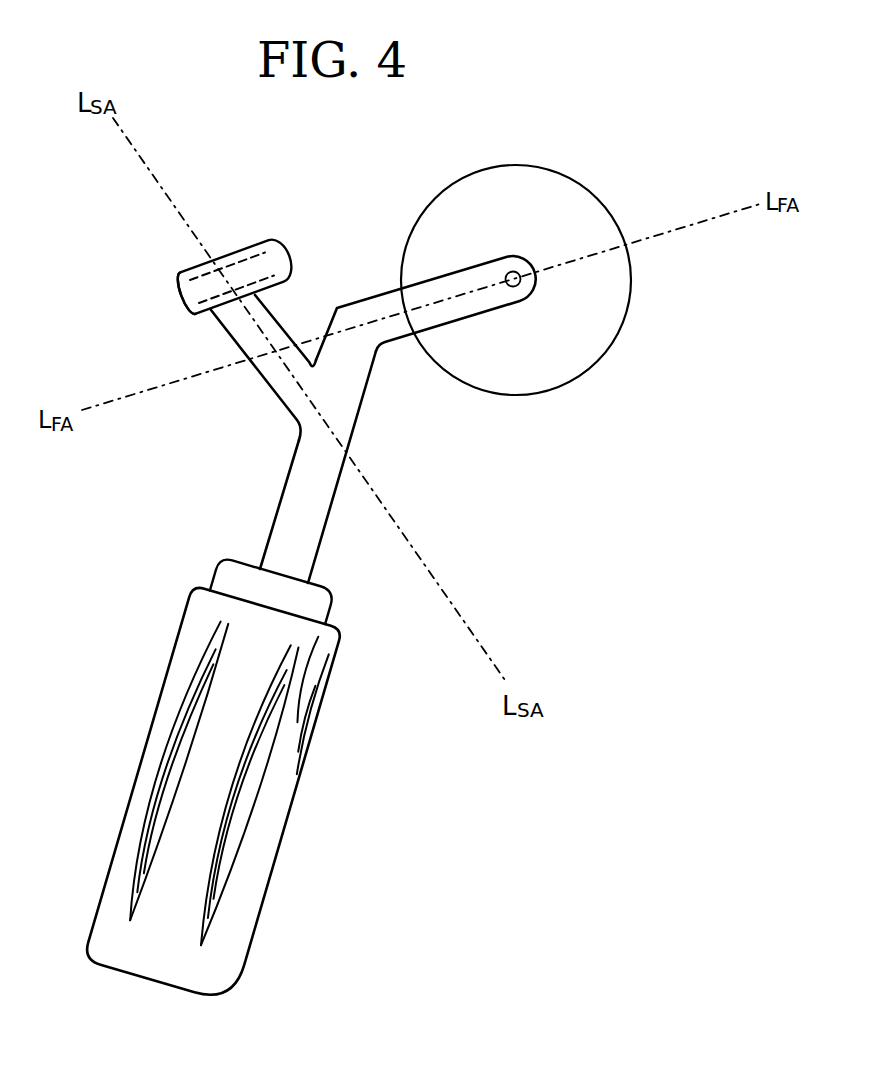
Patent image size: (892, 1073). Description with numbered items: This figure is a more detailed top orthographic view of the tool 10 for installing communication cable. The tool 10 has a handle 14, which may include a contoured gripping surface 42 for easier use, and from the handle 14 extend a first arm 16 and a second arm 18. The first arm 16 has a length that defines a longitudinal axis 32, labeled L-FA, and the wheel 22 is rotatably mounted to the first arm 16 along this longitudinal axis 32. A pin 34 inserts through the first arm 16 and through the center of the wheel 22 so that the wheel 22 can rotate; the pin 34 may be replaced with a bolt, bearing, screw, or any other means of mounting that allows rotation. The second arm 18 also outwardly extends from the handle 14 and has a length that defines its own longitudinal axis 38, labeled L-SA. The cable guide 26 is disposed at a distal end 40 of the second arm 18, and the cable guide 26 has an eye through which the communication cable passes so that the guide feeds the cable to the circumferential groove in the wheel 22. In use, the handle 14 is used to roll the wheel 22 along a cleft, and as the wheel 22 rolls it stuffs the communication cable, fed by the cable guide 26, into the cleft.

The tool 10 is at (95, 260).
The handle 14 is at (266, 547).
The first arm 16 is at (352, 303).
The second arm 18 is at (260, 368).
The wheel 22 is at (575, 180).
The cable guide 26 is at (228, 252).
The longitudinal axis of the first arm 32 is at (674, 231).
The pin 34 is at (520, 284).
The longitudinal axis of the second arm 38 is at (423, 556).
The distal end of the second arm 40 is at (206, 318).
The contoured gripping surface 42 is at (183, 627).